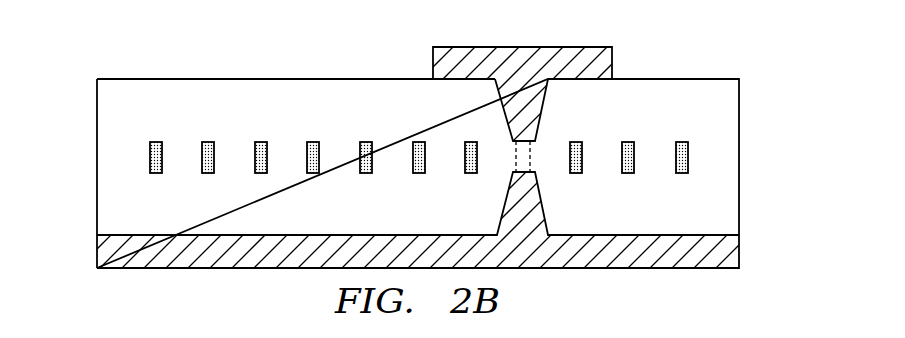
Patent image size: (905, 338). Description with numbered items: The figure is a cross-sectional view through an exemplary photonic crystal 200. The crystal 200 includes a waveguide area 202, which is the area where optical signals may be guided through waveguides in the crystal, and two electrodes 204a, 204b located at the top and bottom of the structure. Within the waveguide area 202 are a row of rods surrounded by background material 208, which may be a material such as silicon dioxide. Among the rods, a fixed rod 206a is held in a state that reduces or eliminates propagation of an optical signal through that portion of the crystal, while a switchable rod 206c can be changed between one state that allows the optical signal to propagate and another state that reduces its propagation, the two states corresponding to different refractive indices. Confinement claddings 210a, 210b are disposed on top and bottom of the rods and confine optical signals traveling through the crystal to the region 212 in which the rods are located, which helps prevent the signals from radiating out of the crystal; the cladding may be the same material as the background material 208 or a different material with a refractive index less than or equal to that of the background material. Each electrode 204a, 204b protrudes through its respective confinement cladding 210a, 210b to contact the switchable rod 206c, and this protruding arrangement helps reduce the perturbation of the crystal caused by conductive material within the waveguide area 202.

The photonic crystal 200 is at (719, 51).
The waveguide area 202 is at (90, 82).
The electrode 204a is at (572, 52).
The electrode 204b is at (105, 248).
The rod 206a is at (363, 140).
The switchable rod 206c is at (530, 157).
The background material 208 is at (181, 152).
The confinement cladding 210a is at (288, 120).
The confinement cladding 210b is at (288, 215).
The region 212 is at (747, 135).